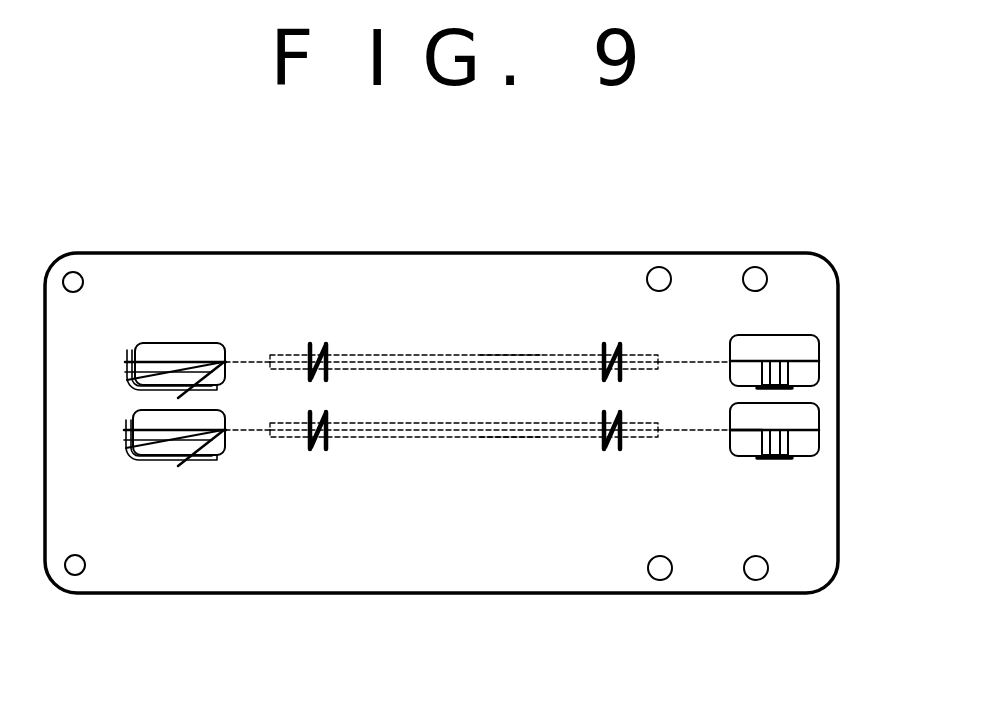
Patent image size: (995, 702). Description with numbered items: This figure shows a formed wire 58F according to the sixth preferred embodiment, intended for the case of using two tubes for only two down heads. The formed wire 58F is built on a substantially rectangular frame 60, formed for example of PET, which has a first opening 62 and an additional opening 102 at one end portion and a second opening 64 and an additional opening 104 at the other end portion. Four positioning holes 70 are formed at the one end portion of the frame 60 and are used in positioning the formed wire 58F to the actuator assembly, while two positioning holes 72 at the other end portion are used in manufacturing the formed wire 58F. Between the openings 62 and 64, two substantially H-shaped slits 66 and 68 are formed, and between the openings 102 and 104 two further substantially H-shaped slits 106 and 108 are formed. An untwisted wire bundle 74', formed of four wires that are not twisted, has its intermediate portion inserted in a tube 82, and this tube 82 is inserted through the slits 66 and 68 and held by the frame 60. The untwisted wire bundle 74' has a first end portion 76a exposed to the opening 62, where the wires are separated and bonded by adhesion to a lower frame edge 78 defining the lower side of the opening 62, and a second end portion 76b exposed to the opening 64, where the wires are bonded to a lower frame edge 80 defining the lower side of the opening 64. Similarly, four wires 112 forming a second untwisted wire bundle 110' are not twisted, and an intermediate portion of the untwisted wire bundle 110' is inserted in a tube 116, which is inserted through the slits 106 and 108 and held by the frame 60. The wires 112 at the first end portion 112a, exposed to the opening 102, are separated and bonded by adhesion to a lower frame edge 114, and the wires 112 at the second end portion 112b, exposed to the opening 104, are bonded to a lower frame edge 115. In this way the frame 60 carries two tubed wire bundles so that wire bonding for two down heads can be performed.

The formed wire 58F is at (384, 253).
The frame 60 is at (443, 593).
The opening 62 is at (800, 343).
The opening 64 is at (180, 343).
The slit 66 is at (611, 342).
The slit 68 is at (318, 343).
The positioning holes 70 is at (658, 267).
The positioning holes 72 is at (74, 272).
The untwisted wire bundle 74' is at (510, 327).
The first end portion 76a is at (790, 366).
The second end portion 76b is at (218, 385).
The lower frame edge 78 is at (790, 388).
The lower frame edge 80 is at (126, 367).
The tube 82 is at (437, 355).
The opening 102 is at (810, 437).
The opening 104 is at (128, 420).
The slit 106 is at (608, 452).
The slit 108 is at (315, 452).
The untwisted wire bundle 110' is at (510, 465).
The wires 112 is at (748, 430).
The first end portion 112a is at (757, 445).
The second end portion 112b is at (215, 458).
The lower frame edge 114 is at (772, 460).
The lower frame edge 115 is at (128, 456).
The tube 116 is at (428, 440).